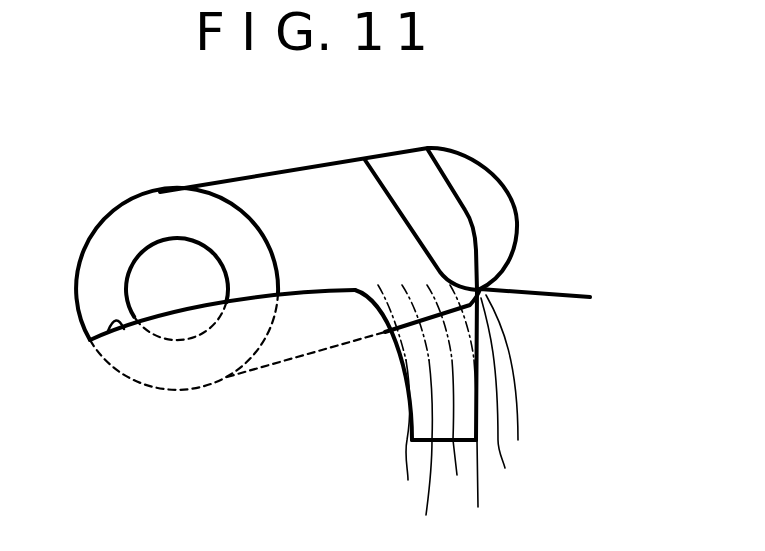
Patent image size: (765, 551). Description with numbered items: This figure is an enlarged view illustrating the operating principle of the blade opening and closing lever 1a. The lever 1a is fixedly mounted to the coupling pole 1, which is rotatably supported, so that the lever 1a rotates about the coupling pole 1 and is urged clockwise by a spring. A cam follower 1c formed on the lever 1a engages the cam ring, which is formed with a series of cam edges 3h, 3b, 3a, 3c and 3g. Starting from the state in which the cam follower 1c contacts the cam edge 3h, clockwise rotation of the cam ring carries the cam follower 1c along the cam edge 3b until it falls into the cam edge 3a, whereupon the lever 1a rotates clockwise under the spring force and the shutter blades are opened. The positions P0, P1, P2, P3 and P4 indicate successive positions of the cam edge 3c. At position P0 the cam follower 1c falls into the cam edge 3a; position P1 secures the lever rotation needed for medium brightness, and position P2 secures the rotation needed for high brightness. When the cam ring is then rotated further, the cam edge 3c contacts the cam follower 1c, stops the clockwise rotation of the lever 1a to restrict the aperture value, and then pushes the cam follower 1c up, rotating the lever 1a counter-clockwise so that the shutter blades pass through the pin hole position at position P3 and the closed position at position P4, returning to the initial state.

The coupling pole 1 is at (157, 238).
The blade opening and closing lever 1a is at (268, 170).
The cam follower 1c is at (470, 215).
The cam edge 3h is at (537, 290).
The cam edge 3g is at (100, 338).
The cam edge 3c is at (407, 371).
The cam edge 3a is at (432, 437).
The cam edge 3b is at (470, 362).
The position P0 is at (394, 398).
The position P1 is at (420, 414).
The position P2 is at (444, 398).
The position P3 is at (472, 414).
The position P4 is at (498, 398).